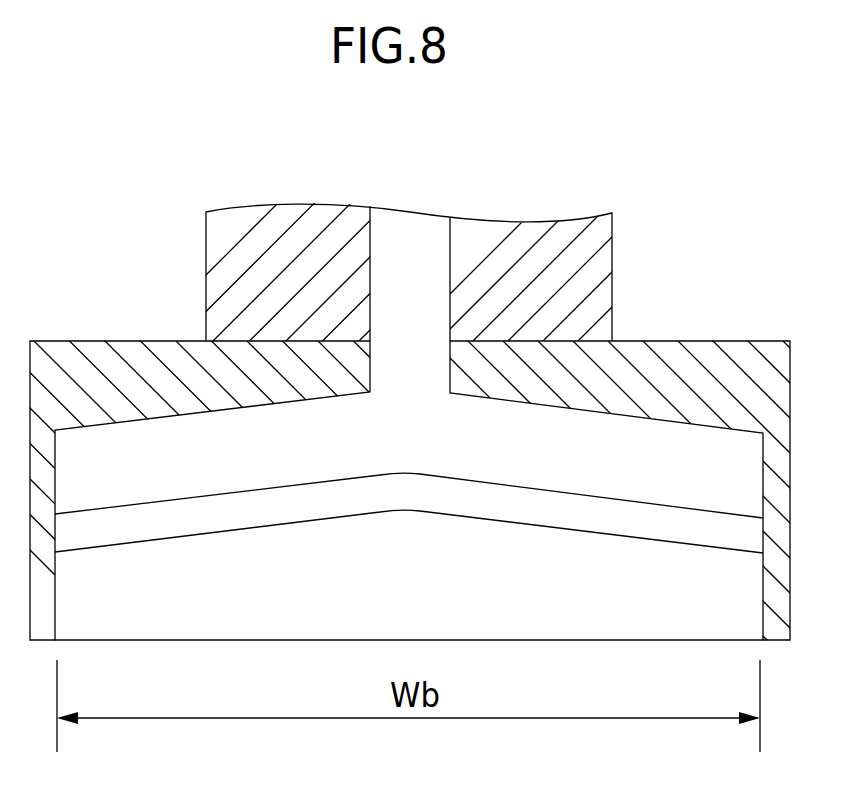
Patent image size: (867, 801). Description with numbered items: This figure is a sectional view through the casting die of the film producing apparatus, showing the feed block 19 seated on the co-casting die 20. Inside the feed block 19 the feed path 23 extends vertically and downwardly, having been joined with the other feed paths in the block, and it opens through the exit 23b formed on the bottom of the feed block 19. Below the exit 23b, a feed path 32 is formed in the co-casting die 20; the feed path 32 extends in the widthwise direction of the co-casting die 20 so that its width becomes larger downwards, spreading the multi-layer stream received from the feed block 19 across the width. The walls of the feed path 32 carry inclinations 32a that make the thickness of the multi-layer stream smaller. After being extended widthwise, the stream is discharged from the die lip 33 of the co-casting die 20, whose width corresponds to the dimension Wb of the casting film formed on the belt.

The feed block 19 is at (631, 243).
The co-casting die 20 is at (713, 328).
The feed path 23 is at (410, 233).
The exit 23b is at (408, 333).
The feed path 32 is at (147, 447).
The inclinations 32a is at (500, 510).
The die lip 33 is at (515, 643).